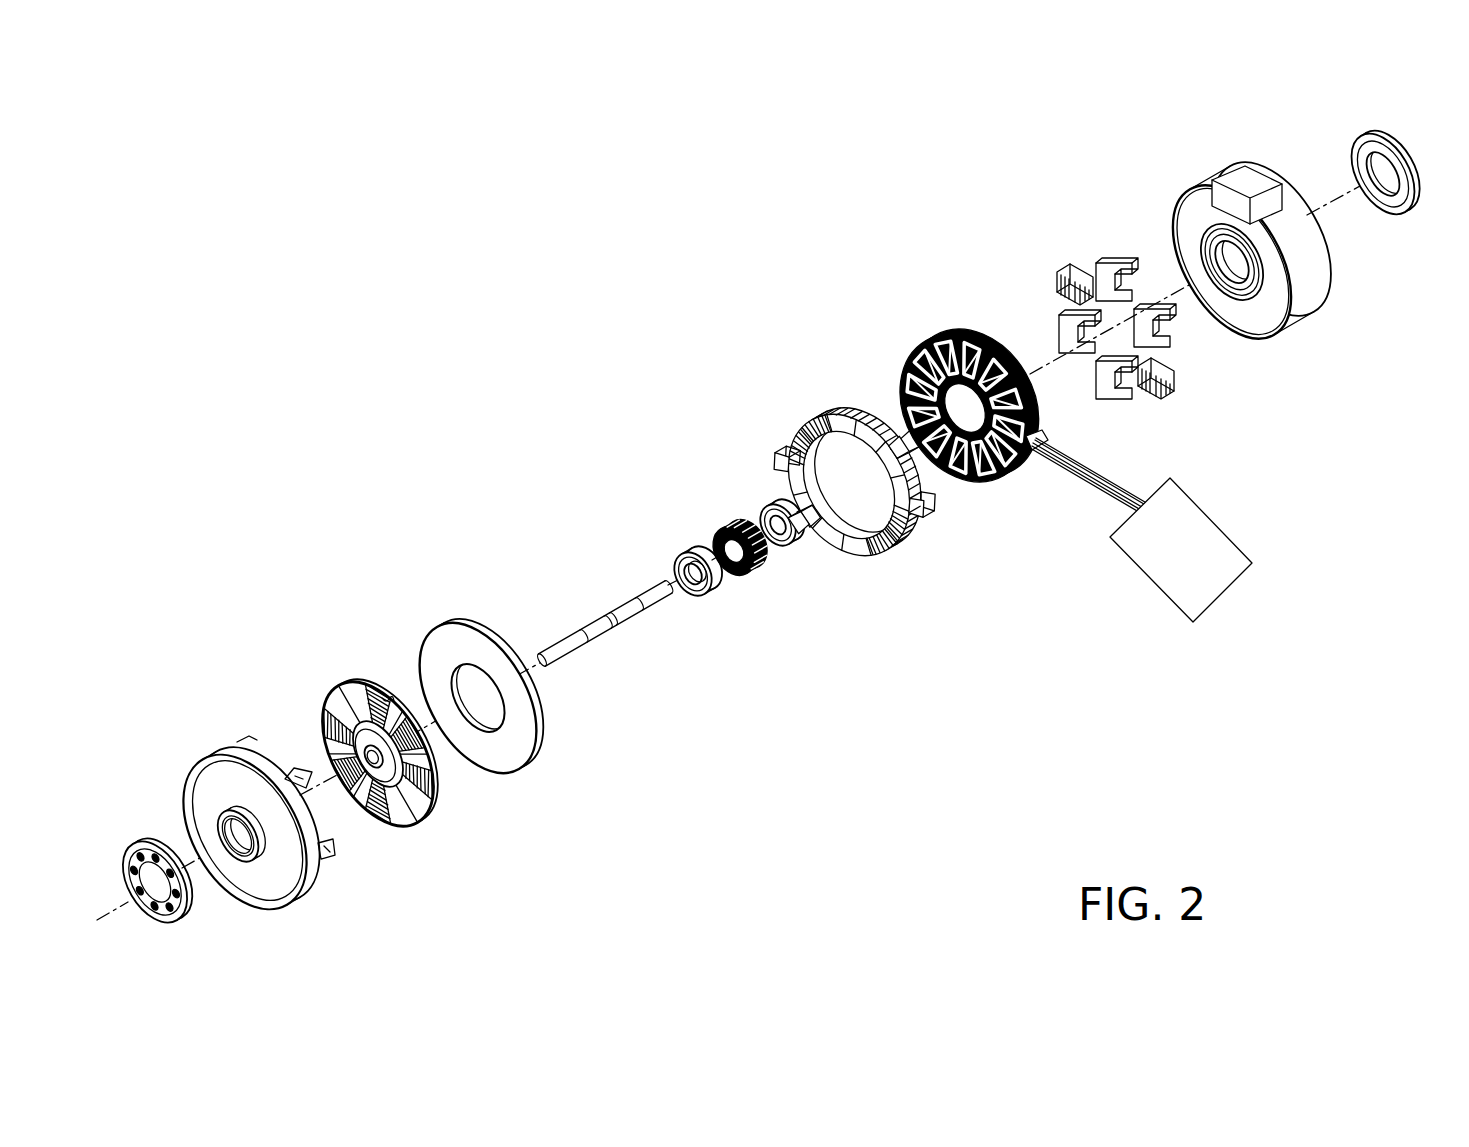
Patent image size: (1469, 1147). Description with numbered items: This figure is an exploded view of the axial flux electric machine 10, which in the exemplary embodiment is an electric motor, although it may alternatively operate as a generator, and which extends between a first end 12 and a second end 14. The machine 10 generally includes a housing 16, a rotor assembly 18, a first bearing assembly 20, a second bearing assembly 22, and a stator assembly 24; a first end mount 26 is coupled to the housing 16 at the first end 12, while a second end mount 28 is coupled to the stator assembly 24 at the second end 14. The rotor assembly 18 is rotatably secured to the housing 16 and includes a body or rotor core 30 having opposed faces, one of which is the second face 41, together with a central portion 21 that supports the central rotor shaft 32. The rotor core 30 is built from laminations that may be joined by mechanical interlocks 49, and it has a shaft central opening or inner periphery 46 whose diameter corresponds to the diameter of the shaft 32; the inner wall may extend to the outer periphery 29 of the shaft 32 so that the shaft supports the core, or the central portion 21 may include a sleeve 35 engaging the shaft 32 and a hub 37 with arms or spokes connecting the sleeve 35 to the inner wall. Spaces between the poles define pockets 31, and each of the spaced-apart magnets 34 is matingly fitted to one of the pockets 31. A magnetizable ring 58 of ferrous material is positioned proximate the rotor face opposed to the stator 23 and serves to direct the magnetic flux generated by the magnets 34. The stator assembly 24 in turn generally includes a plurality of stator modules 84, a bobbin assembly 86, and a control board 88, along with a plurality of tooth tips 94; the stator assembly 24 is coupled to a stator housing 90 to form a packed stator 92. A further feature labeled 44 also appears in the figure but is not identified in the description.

The axial flux electric machine 10 is at (590, 377).
The first end 12 is at (143, 790).
The second end 14 is at (1418, 135).
The housing 16 is at (298, 898).
The rotor assembly 18 is at (383, 693).
The first bearing assembly 20 is at (702, 590).
The central portion 21 is at (378, 754).
The second bearing assembly 22 is at (777, 505).
The stator 23 is at (945, 215).
The stator assembly 24 is at (1015, 533).
The first end mount 26 is at (185, 928).
The second end mount 28 is at (1398, 215).
The outer periphery of shaft 29 is at (597, 642).
The rotor core 30 is at (382, 752).
The pockets 31 is at (473, 822).
The central rotor shaft 32 is at (605, 616).
The magnets 34 is at (378, 754).
The sleeve 35 is at (405, 738).
The hub 37 is at (374, 756).
The second face 41 is at (335, 728).
The pole segment 44 is at (351, 770).
The shaft central opening 46 is at (396, 723).
The mechanical interlocks 49 is at (377, 704).
The magnetizable ring 58 is at (533, 765).
The stator modules 84 is at (1062, 263).
The bobbin assembly 86 is at (923, 337).
The control board 88 is at (1230, 590).
The stator housing 90 is at (1212, 175).
The packed stator 92 is at (1251, 214).
The tooth tips 94 is at (800, 412).